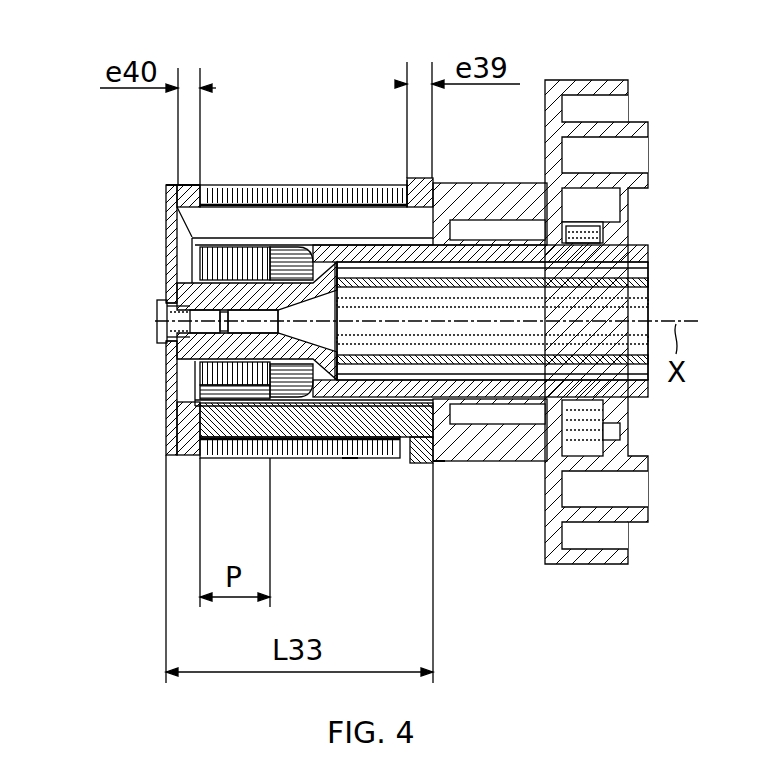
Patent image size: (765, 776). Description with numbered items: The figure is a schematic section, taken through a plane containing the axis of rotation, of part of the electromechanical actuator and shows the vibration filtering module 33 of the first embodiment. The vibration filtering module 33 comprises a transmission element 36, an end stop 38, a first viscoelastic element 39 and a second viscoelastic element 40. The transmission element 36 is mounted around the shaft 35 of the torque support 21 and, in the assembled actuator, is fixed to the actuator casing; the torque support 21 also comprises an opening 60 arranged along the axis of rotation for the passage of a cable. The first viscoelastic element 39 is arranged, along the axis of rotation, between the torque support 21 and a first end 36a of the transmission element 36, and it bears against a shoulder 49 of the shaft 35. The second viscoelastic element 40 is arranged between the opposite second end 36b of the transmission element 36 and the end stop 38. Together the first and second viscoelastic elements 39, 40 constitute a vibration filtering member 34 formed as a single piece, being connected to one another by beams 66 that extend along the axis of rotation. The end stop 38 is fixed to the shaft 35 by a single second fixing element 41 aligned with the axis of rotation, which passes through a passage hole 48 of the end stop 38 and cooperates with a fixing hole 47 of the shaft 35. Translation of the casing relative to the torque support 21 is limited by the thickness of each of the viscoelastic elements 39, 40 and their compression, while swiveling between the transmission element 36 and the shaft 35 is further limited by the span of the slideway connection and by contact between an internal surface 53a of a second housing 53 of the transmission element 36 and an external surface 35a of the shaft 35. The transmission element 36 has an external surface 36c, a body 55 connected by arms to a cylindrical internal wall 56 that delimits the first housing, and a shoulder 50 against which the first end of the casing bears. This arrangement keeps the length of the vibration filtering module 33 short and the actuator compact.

The torque support 21 is at (550, 128).
The vibration filtering module 33 is at (131, 442).
The vibration filtering member 34 is at (296, 430).
The shaft 35 is at (467, 392).
The external surface 35a is at (335, 403).
The transmission element 36 is at (308, 186).
The first end 36a is at (400, 180).
The second end 36b is at (212, 193).
The external surface 36c is at (237, 462).
The end stop 38 is at (172, 232).
The first viscoelastic element 39 is at (417, 190).
The second viscoelastic element 40 is at (195, 183).
The second fixing element 41 is at (157, 322).
The fixing hole 47 is at (235, 330).
The passage hole 48 is at (172, 298).
The shoulder 49 is at (437, 461).
The shoulder 50 is at (405, 468).
The second housing 53 is at (178, 400).
The internal surface 53a is at (279, 437).
The body 55 is at (343, 200).
The internal wall 56 is at (236, 258).
The opening 60 is at (596, 234).
The beams 66 is at (350, 458).